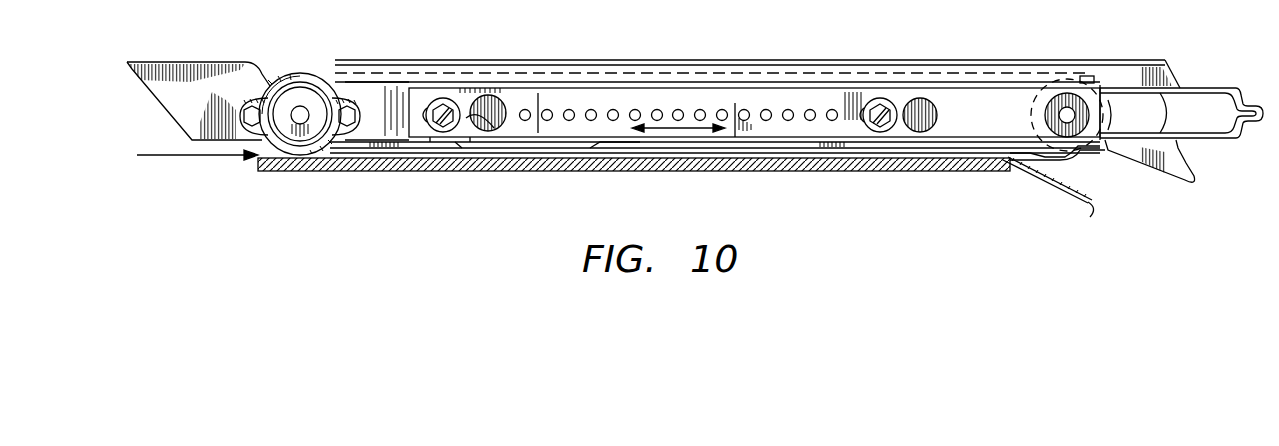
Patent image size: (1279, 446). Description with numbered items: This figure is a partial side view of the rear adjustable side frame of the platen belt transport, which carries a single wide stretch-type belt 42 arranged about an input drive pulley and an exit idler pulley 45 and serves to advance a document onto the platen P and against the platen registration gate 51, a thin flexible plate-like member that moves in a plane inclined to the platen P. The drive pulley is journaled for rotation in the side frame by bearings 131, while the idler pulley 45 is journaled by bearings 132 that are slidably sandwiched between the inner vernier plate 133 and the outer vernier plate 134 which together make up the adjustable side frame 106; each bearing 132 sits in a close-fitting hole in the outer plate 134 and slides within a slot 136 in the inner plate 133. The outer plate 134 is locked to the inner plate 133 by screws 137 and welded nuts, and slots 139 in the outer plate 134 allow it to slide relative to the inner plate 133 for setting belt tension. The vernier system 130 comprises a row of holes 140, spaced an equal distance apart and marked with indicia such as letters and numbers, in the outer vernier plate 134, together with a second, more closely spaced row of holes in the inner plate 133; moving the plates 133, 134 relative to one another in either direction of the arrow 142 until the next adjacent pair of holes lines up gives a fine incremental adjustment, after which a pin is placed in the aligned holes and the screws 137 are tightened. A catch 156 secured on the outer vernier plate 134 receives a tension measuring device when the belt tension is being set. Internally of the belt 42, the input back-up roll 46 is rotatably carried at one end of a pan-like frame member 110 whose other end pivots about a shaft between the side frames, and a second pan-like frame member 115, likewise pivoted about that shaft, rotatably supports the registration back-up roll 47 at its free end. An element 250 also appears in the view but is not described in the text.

The belt 42 is at (283, 73).
The exit idler pulley 45 is at (270, 85).
The bearings 131 is at (305, 98).
The inner vernier plate 133 is at (370, 85).
The front adjustable side frame 106 is at (984, 64).
The vernier system 130 is at (763, 31).
The row of holes 140 is at (656, 108).
The arrow 142 is at (683, 132).
The screws 137 is at (440, 132).
The slots 139 is at (490, 131).
The outer vernier plate 134 is at (920, 134).
The platen P is at (480, 130).
The pan-like frame member 110 is at (456, 142).
The second pan-like frame member 115 is at (600, 150).
The input back-up roll 46 is at (352, 172).
The bearings 132 is at (1055, 112).
The registration back-up roll 47 is at (990, 148).
The bracket arm 250 is at (1020, 152).
The platen registration gate 51 is at (1078, 186).
The slot 136 is at (1110, 112).
The catch 156 is at (1230, 140).